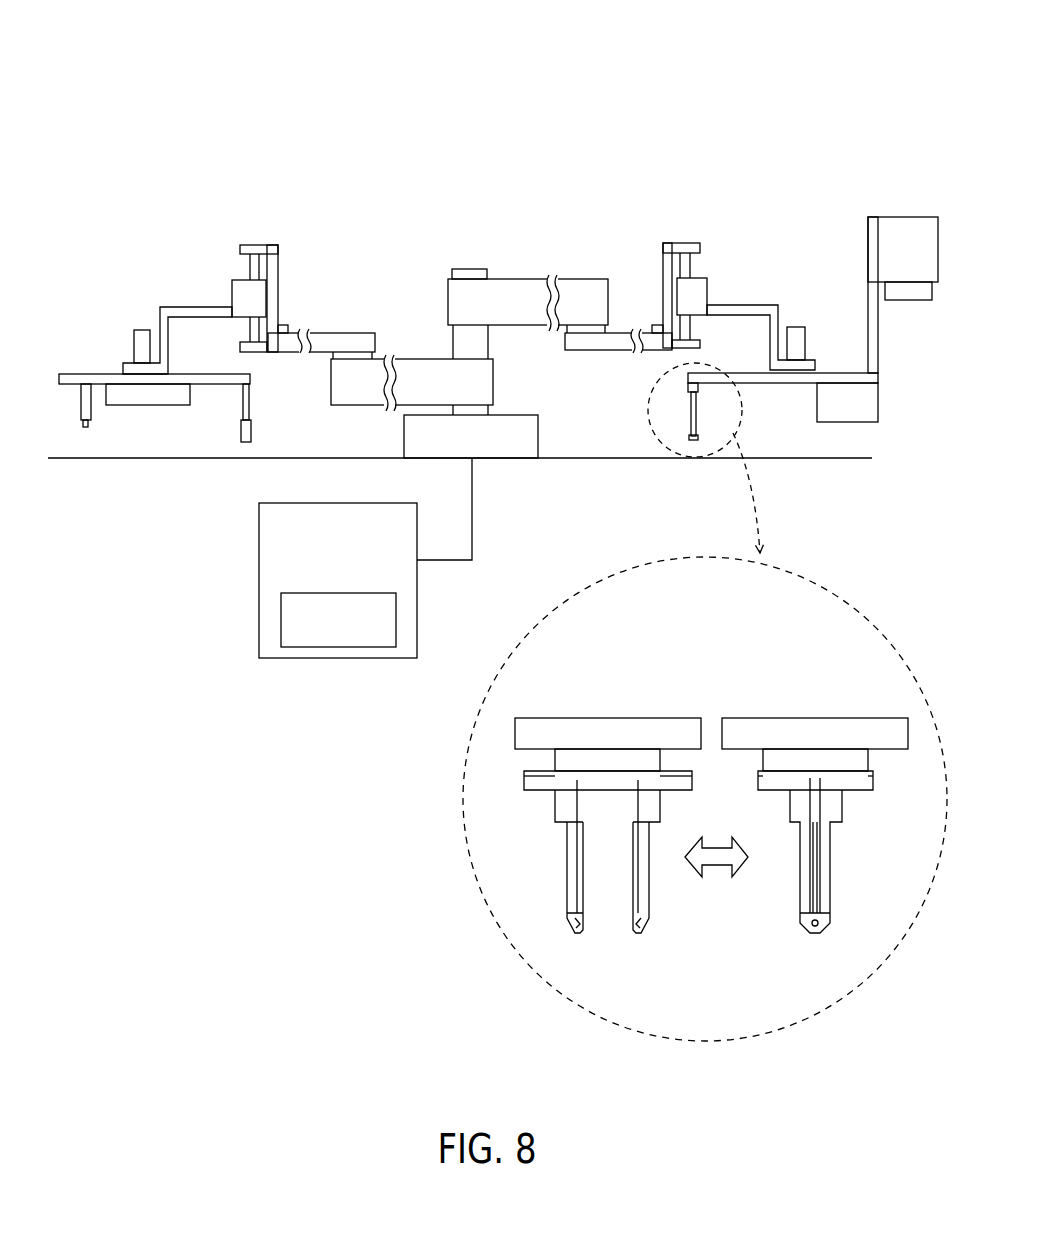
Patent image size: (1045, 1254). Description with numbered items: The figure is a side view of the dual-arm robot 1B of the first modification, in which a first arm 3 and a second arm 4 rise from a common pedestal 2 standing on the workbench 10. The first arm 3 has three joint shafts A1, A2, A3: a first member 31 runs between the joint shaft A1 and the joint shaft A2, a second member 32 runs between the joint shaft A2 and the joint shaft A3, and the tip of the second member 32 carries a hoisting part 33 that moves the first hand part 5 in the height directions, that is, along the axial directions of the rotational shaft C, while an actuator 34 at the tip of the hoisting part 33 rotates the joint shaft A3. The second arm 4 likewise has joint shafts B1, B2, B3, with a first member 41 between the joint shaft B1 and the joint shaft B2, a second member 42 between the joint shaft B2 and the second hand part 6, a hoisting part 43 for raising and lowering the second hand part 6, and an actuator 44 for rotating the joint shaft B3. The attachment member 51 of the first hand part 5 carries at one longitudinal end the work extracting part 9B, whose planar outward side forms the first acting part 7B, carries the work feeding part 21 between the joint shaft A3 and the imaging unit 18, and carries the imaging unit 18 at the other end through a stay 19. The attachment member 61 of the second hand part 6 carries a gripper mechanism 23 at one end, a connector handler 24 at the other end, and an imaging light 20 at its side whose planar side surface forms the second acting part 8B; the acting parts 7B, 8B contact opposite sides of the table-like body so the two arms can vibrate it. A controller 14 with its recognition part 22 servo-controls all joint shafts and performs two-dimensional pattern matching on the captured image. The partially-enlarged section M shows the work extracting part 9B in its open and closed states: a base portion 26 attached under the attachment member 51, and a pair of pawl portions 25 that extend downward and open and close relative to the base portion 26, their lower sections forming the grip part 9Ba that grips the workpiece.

The robot 1B is at (531, 95).
The pedestal 2 is at (500, 452).
The first arm 3 is at (637, 236).
The second arm 4 is at (360, 259).
The first hand part 5 is at (788, 251).
The second hand part 6 is at (76, 359).
The first acting part 7B is at (684, 388).
The second acting part 8B is at (165, 405).
The work extracting part 9B is at (698, 410).
The grip part 9Ba is at (607, 920).
The workbench 10 is at (578, 457).
The controller 14 is at (275, 538).
The imaging unit 18 is at (905, 222).
The stay 19 is at (878, 342).
The imaging light 20 is at (128, 394).
The work feeding part 21 is at (880, 398).
The recognition part 22 is at (285, 620).
The gripper mechanism 23 is at (252, 407).
The connector handler 24 is at (85, 400).
The pawl portions 25 is at (572, 883).
The base portion 26 is at (563, 762).
The first member 31 is at (510, 280).
The second member 32 is at (602, 350).
The hoisting part 33 is at (704, 292).
The actuator 34 is at (800, 343).
The first member 41 is at (416, 365).
The second member 42 is at (318, 333).
The hoisting part 43 is at (238, 295).
The actuator 44 is at (140, 348).
The attachment member 51 is at (838, 372).
The attachment member 61 is at (203, 374).
The joint shaft A1 is at (446, 303).
The joint shaft A2 is at (585, 276).
The joint shaft A3 is at (800, 386).
The joint shaft B1 is at (496, 382).
The joint shaft B2 is at (352, 331).
The joint shaft B3 is at (143, 324).
The rotational shaft C is at (470, 269).
The partially-enlarged section M is at (845, 588).